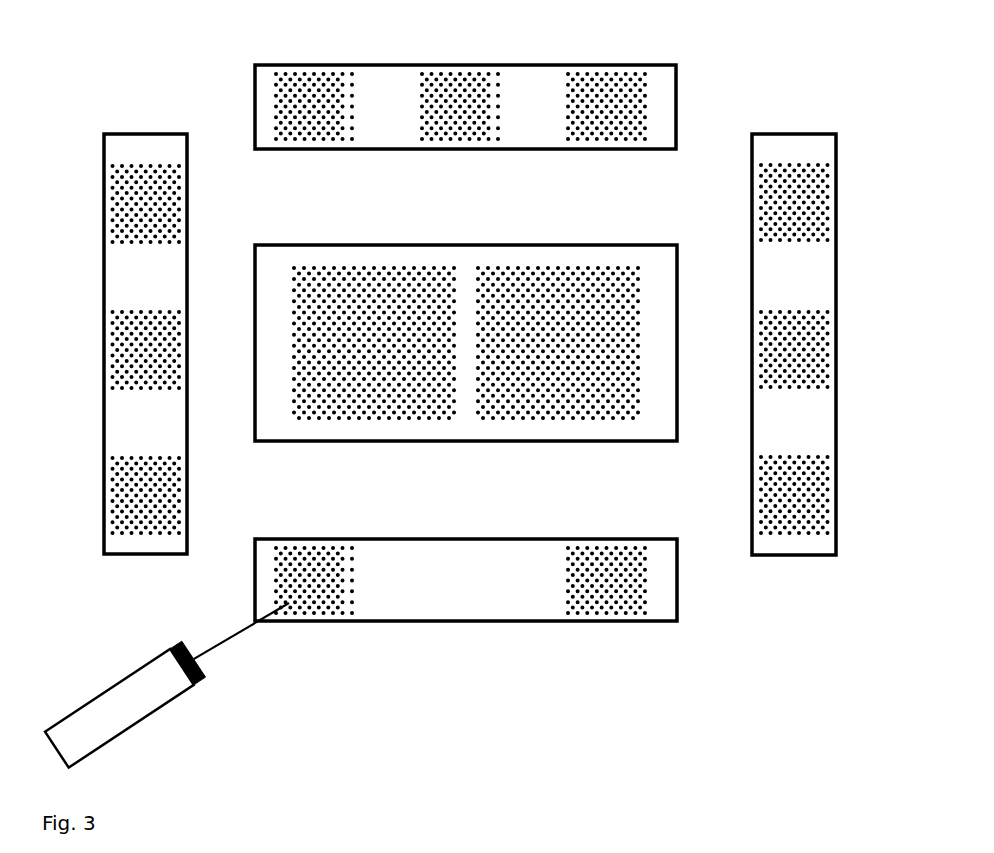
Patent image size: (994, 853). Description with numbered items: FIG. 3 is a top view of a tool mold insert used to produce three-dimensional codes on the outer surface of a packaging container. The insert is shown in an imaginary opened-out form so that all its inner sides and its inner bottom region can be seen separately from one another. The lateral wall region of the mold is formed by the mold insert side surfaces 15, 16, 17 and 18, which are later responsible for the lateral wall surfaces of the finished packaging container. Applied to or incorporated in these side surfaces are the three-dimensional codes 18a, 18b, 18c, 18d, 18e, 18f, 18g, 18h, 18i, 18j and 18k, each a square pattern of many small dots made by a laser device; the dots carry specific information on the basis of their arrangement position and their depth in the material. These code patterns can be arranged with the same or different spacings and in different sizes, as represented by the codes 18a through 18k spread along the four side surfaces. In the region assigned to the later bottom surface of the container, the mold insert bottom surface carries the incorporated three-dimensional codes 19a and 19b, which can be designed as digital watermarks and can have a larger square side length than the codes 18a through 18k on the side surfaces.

The mold insert side surface 15 is at (820, 430).
The mold insert side surface 16 is at (466, 607).
The mold insert side surface 17 is at (128, 146).
The mold insert side surface 18 is at (262, 91).
The 3D code 18a is at (117, 198).
The 3D code 18b is at (318, 79).
The 3D code 18c is at (460, 80).
The 3D code 18d is at (606, 80).
The 3D code 18e is at (825, 201).
The 3D code 18f is at (825, 342).
The 3D code 18g is at (825, 502).
The 3D code 18h is at (602, 613).
The 3D code 18i is at (325, 613).
The 3D code 18j is at (117, 500).
The 3D code 18k is at (117, 353).
The three-dimensional code 19a is at (381, 418).
The three-dimensional code 19b is at (563, 418).